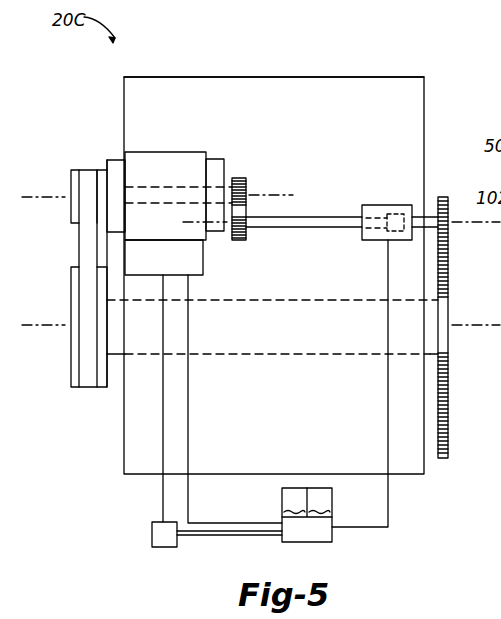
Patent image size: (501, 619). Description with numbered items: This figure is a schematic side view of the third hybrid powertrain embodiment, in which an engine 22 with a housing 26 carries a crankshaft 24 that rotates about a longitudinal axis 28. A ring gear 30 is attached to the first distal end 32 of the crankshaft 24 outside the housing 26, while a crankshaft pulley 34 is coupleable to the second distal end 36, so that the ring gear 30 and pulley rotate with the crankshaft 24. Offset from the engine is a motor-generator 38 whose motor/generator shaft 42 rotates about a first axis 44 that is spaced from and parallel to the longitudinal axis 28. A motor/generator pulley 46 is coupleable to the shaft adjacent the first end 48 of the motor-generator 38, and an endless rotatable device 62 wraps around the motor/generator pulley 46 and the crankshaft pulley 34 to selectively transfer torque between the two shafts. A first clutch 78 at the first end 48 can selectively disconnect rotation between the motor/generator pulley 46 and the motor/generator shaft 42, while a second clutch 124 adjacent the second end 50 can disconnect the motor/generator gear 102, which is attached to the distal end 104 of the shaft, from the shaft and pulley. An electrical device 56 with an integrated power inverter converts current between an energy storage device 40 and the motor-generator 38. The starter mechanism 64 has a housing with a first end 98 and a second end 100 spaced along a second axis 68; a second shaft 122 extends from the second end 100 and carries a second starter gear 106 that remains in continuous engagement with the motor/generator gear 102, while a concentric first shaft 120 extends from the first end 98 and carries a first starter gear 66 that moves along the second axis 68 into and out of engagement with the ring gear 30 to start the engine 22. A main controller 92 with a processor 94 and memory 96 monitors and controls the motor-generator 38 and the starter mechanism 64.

The engine 22 is at (273, 77).
The crankshaft 24 is at (143, 357).
The housing 26 is at (408, 126).
The longitudinal axis 28 is at (45, 325).
The ring gear 30 is at (448, 434).
The first distal end 32 is at (430, 355).
The crankshaft pulley 34 is at (77, 372).
The second distal end 36 is at (118, 354).
The motor-generator 38 is at (168, 151).
The energy storage device 40 is at (160, 535).
The motor/generator shaft 42 is at (232, 178).
The first axis 44 is at (45, 197).
The motor/generator pulley 46 is at (71, 171).
The first end 48 is at (118, 157).
The second end 50 is at (206, 235).
The electrical device 56 is at (200, 262).
The endless rotatable device 62 is at (87, 243).
The starter mechanism 64 is at (384, 205).
The first starter gear 66 is at (446, 208).
The second axis 68 is at (473, 224).
The first clutch 78 is at (115, 232).
The main controller 92 is at (322, 542).
The processor 94 is at (295, 504).
The memory 96 is at (319, 504).
The first end 98 is at (421, 240).
The second end 100 is at (362, 235).
The motor/generator gear 102 is at (239, 178).
The distal end 104 is at (247, 208).
The second starter gear 106 is at (247, 235).
The first shaft 120 is at (417, 220).
The second shaft 122 is at (320, 216).
The second clutch 124 is at (213, 159).